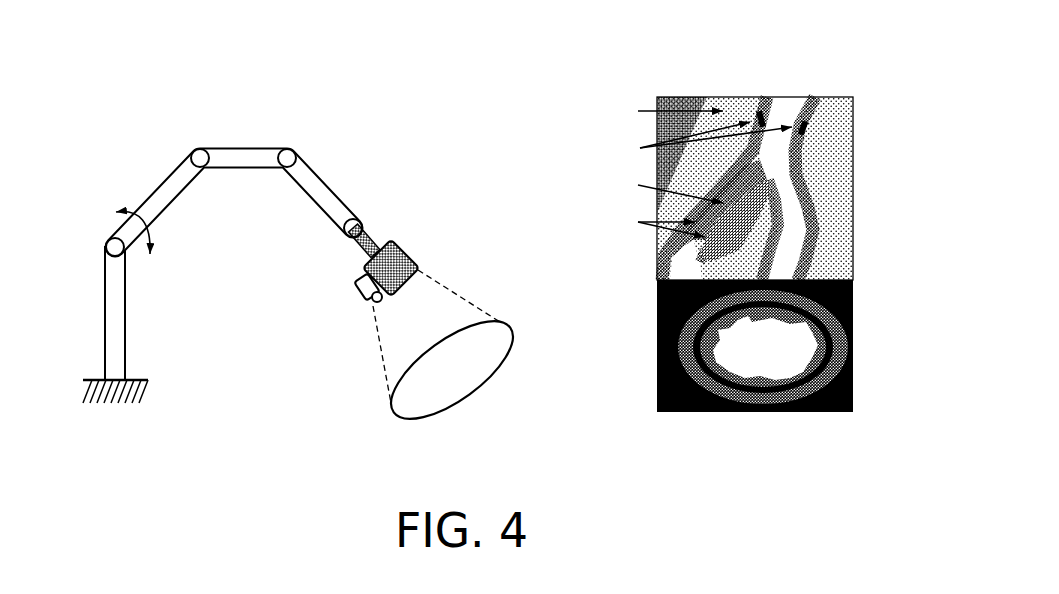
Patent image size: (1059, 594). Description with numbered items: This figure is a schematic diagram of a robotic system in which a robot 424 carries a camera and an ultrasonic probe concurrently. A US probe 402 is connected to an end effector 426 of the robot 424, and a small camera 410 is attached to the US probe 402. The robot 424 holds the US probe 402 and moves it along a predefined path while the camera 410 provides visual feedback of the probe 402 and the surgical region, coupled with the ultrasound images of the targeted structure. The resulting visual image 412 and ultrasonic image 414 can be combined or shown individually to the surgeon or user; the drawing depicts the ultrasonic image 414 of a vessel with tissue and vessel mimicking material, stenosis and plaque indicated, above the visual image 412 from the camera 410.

The US probe 402 is at (410, 246).
The camera 410 is at (360, 302).
The visual image 412 is at (665, 417).
The ultrasonic image 414 is at (668, 91).
The robot 424 is at (175, 202).
The end effector 426 is at (360, 244).